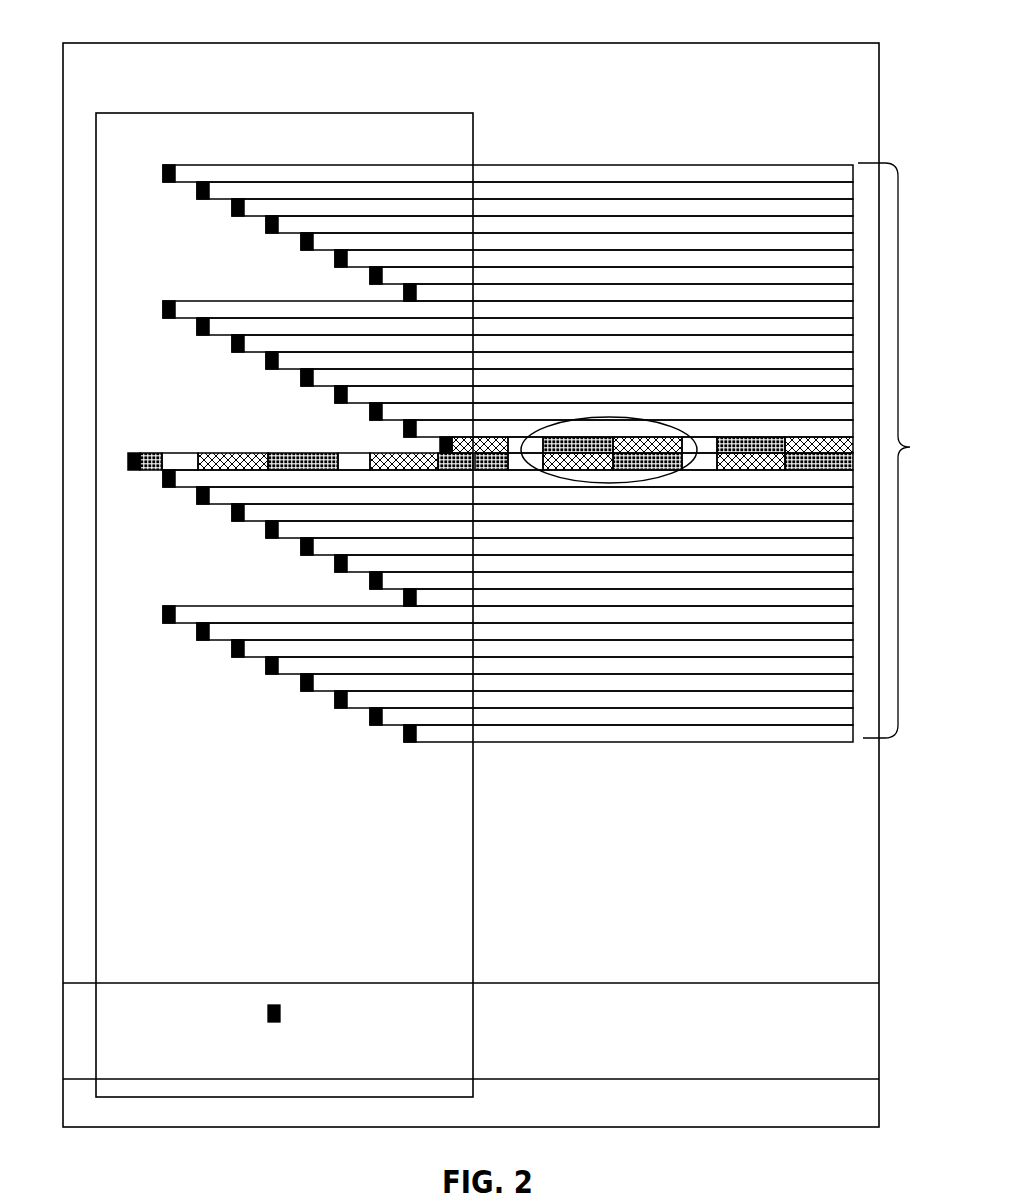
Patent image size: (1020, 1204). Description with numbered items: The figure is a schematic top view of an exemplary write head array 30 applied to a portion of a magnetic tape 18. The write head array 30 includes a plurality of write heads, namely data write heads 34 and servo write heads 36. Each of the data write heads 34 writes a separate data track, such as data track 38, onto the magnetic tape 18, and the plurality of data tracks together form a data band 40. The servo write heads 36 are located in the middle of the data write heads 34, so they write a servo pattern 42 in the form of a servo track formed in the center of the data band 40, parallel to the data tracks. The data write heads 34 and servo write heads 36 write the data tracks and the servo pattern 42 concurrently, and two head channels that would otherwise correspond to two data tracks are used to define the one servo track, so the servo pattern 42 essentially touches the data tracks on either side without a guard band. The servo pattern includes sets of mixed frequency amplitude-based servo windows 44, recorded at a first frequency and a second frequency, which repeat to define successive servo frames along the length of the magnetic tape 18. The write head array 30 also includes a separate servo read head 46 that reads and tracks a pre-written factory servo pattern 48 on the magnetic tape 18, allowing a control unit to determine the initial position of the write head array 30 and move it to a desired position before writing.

The magnetic tape 18 is at (767, 43).
The write head array 30 is at (431, 113).
The data write heads 34 is at (222, 512).
The servo write heads 36 is at (438, 445).
The data track 38 is at (856, 200).
The data band 40 is at (905, 450).
The servo pattern 42 is at (864, 453).
The mixed frequency amplitude-based servo windows 44 is at (630, 417).
The servo read head 46 is at (266, 1012).
The factory servo pattern 48 is at (740, 983).